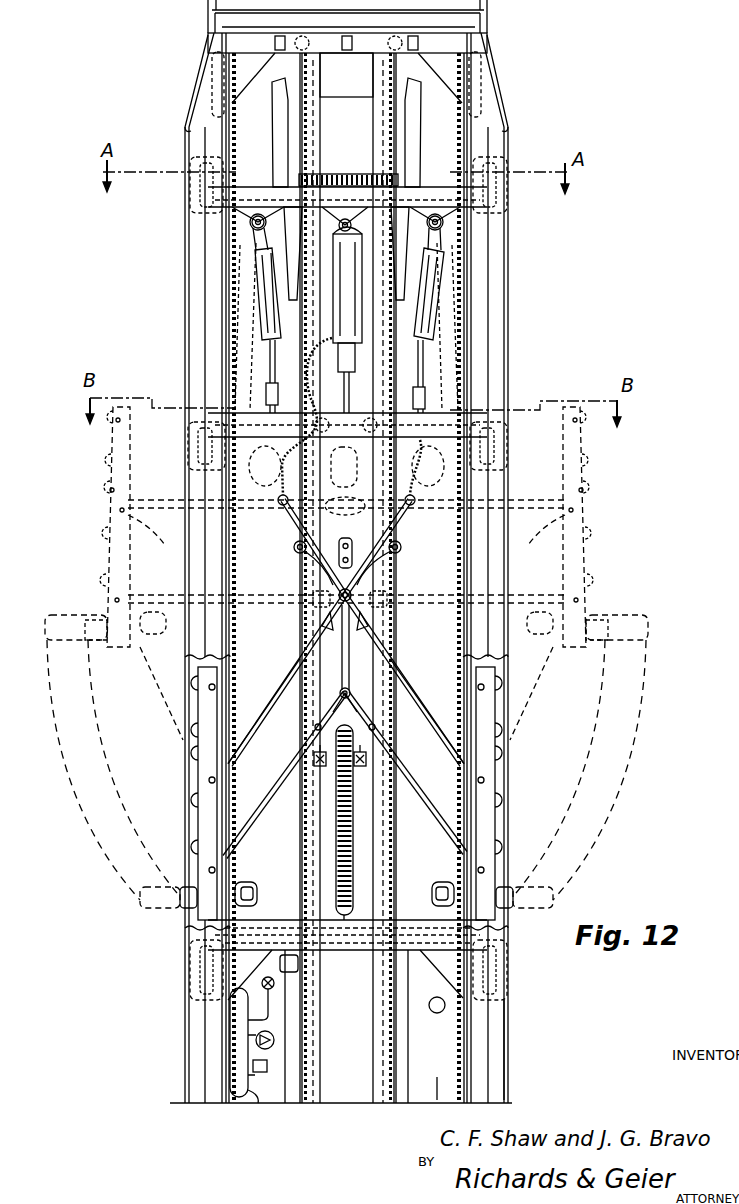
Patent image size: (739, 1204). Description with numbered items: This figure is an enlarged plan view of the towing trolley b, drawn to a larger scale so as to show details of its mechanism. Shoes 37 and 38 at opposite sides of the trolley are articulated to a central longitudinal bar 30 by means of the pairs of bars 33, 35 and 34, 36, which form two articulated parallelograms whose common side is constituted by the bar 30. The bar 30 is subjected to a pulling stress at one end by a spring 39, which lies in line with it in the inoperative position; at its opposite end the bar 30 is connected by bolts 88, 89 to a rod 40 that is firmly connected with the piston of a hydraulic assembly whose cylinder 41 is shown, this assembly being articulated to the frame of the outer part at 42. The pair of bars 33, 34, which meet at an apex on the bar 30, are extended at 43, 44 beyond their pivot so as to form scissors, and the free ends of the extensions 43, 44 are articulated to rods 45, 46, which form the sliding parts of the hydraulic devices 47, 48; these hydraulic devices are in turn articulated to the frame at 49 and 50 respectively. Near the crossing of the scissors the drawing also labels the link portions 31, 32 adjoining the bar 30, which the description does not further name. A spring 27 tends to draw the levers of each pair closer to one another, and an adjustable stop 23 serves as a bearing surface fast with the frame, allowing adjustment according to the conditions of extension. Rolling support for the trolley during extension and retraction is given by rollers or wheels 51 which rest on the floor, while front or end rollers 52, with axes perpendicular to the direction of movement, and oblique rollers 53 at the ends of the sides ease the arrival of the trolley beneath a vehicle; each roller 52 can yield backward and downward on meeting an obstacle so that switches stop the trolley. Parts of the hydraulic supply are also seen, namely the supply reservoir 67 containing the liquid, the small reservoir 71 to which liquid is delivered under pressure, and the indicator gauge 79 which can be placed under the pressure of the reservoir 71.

The front or end roller 52 is at (481, 14).
The oblique roller 53 is at (200, 100).
The roller or wheel 51 is at (200, 196).
The spring 27 is at (346, 175).
The articulation of hydraulic device 47 49 is at (250, 222).
The articulation of hydraulic device 48 50 is at (444, 222).
The articulation of hydraulic assembly 42 is at (268, 255).
The hydraulic device 47 is at (265, 290).
The rod 45 is at (268, 355).
The hydraulic device 48 is at (442, 262).
The rod 46 is at (427, 365).
The cylinder of hydraulic assembly 41 is at (350, 365).
The rod 40 is at (346, 378).
The shoe 38 is at (118, 480).
The shoe 37 is at (592, 493).
The extension of bar 33 43 is at (302, 520).
The extension of bar 34 44 is at (401, 510).
The bolt 88 is at (353, 545).
The bolt 89 is at (353, 560).
The left lower link fork 32 is at (328, 612).
The right lower link fork 31 is at (362, 612).
The central longitudinal bar 30 is at (342, 660).
The bar 33 is at (422, 700).
The bar 34 is at (258, 722).
The bar 36 is at (274, 790).
The bar 35 is at (421, 793).
The stop 23 is at (358, 768).
The spring 39 is at (354, 838).
The small reservoir 71 is at (238, 1042).
The indicator gauge 79 is at (275, 1040).
The supply reservoir 67 is at (437, 1077).
The towing trolley b is at (509, 1042).